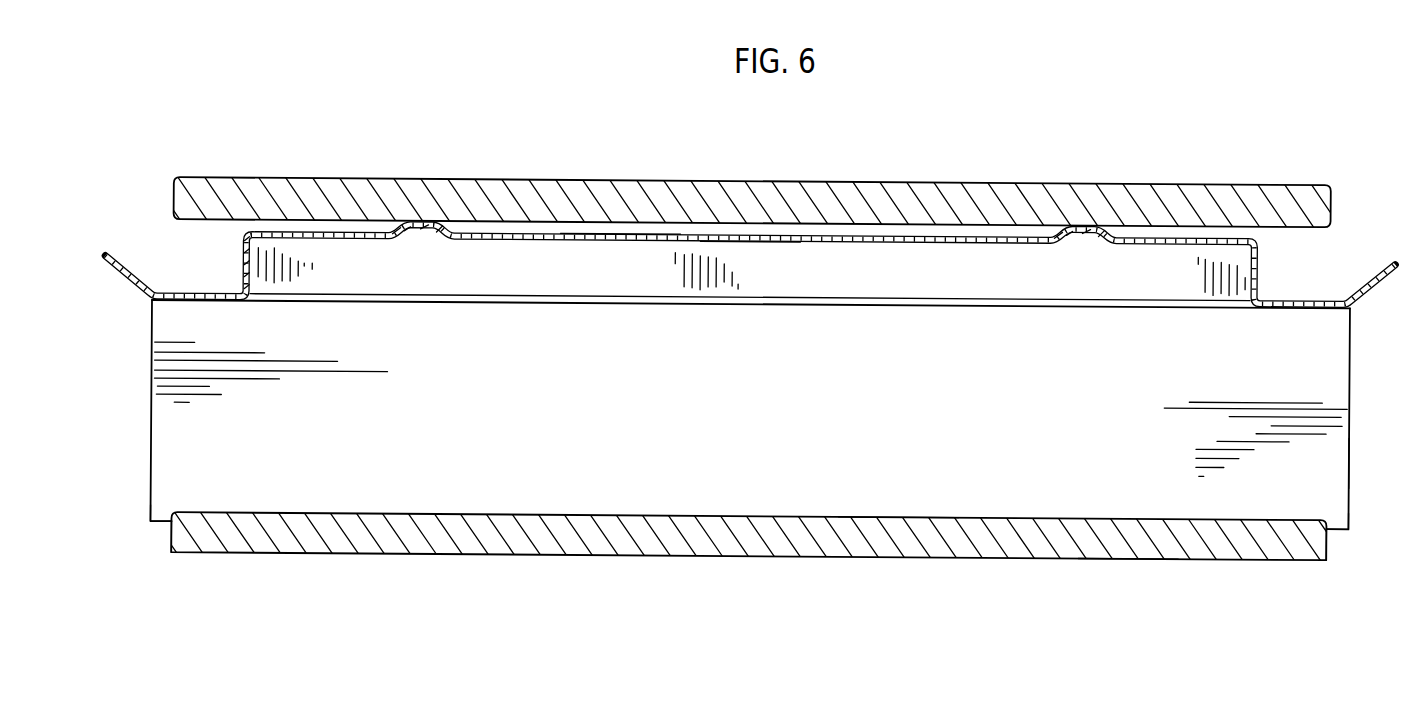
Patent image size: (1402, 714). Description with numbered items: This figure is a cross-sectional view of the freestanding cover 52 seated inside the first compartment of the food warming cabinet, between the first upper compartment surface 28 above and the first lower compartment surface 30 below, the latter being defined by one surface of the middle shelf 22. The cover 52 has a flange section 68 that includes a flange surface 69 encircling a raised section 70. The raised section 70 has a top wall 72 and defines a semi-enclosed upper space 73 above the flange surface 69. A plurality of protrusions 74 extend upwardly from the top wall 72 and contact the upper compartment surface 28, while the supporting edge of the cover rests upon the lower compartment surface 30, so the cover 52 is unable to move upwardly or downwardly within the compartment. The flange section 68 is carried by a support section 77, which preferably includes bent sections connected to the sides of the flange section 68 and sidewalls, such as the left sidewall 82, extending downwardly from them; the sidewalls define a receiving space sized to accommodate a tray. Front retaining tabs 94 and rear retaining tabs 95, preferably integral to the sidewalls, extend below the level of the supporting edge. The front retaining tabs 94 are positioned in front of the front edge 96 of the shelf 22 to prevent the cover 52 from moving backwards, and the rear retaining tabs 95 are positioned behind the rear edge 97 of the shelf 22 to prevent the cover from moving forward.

The middle shelf 22 is at (442, 553).
The first upper compartment surface 28 is at (1280, 240).
The first lower compartment surface 30 is at (1110, 518).
The freestanding cover 52 is at (898, 517).
The flange section 68 is at (982, 233).
The flange surface 69 is at (345, 297).
The raised section 70 is at (243, 258).
The top wall 72 is at (747, 237).
The semi-enclosed upper space 73 is at (615, 231).
The protrusions 74 is at (450, 222).
The support section 77 is at (1351, 455).
The left sidewall 82 is at (725, 404).
The front retaining tabs 94 is at (160, 527).
The rear retaining tabs 95 is at (1343, 532).
The front edge 96 is at (172, 530).
The rear edge 97 is at (1333, 560).